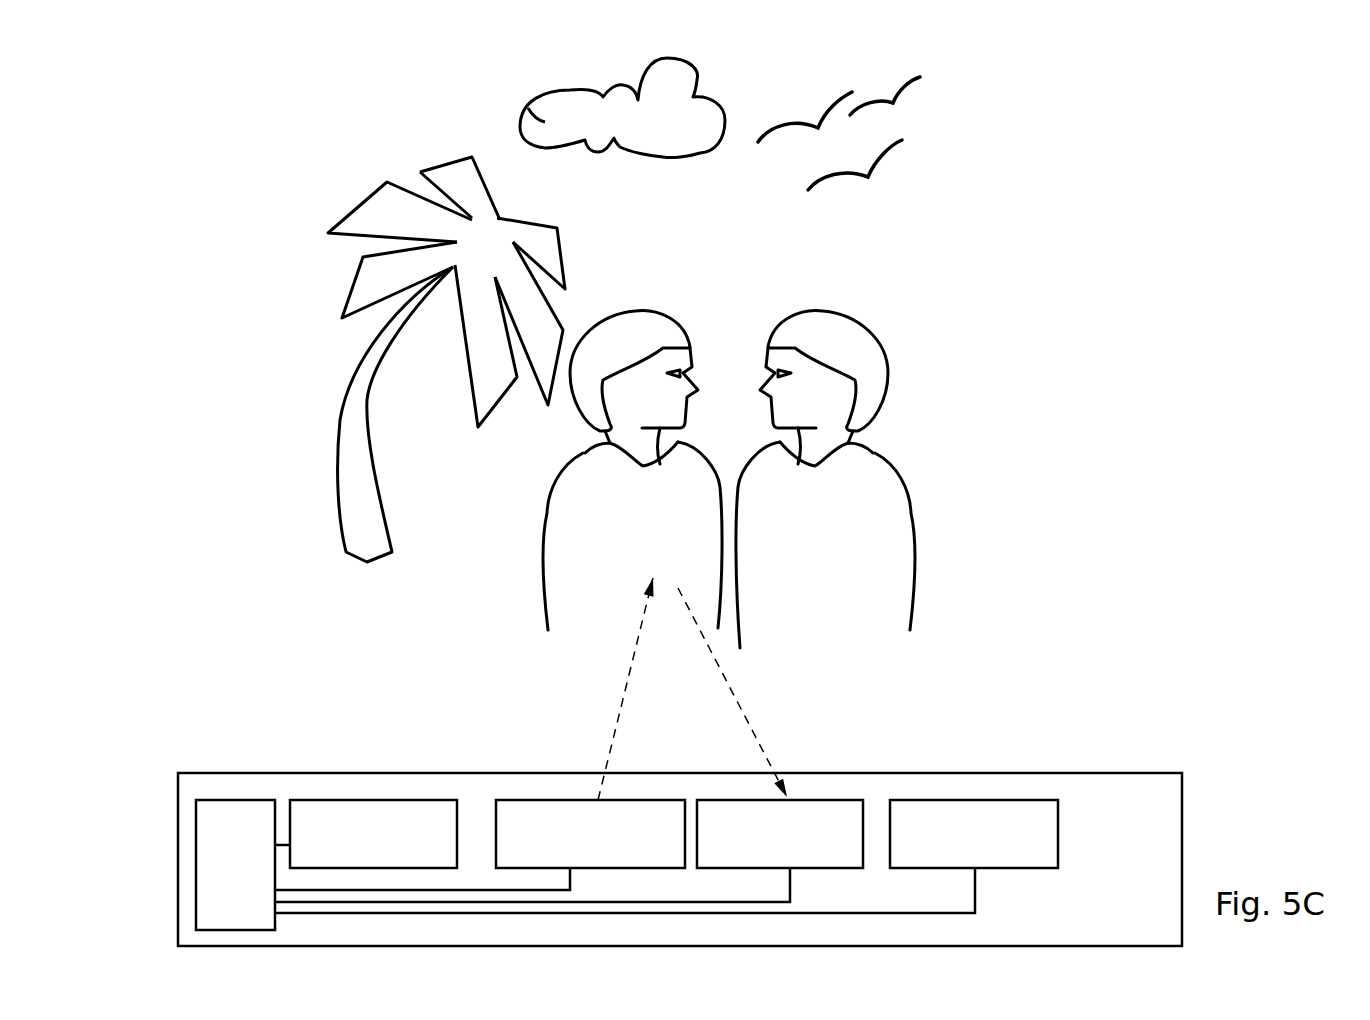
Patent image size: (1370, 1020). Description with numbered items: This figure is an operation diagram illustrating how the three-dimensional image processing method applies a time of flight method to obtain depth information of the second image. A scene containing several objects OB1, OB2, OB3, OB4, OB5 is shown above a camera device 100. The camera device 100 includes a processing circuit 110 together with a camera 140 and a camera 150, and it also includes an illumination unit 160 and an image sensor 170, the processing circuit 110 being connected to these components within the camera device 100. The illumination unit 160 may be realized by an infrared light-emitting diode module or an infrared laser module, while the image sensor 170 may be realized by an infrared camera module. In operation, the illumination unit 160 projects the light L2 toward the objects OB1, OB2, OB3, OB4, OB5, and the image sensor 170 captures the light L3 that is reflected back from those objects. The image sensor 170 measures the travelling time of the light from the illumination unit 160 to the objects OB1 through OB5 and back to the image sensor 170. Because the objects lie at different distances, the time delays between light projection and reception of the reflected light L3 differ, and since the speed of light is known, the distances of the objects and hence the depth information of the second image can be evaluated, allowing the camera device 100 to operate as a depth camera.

The object OB1 is at (565, 257).
The object OB2 is at (605, 550).
The object OB3 is at (817, 328).
The object OB4 is at (527, 100).
The object OB5 is at (818, 120).
The camera device 100 is at (1172, 937).
The processing circuit 110 is at (255, 879).
The camera 140 is at (435, 847).
The camera 150 is at (1035, 847).
The illumination unit 160 is at (610, 866).
The image sensor 170 is at (800, 866).
The light L2 is at (626, 689).
The light L3 is at (732, 692).